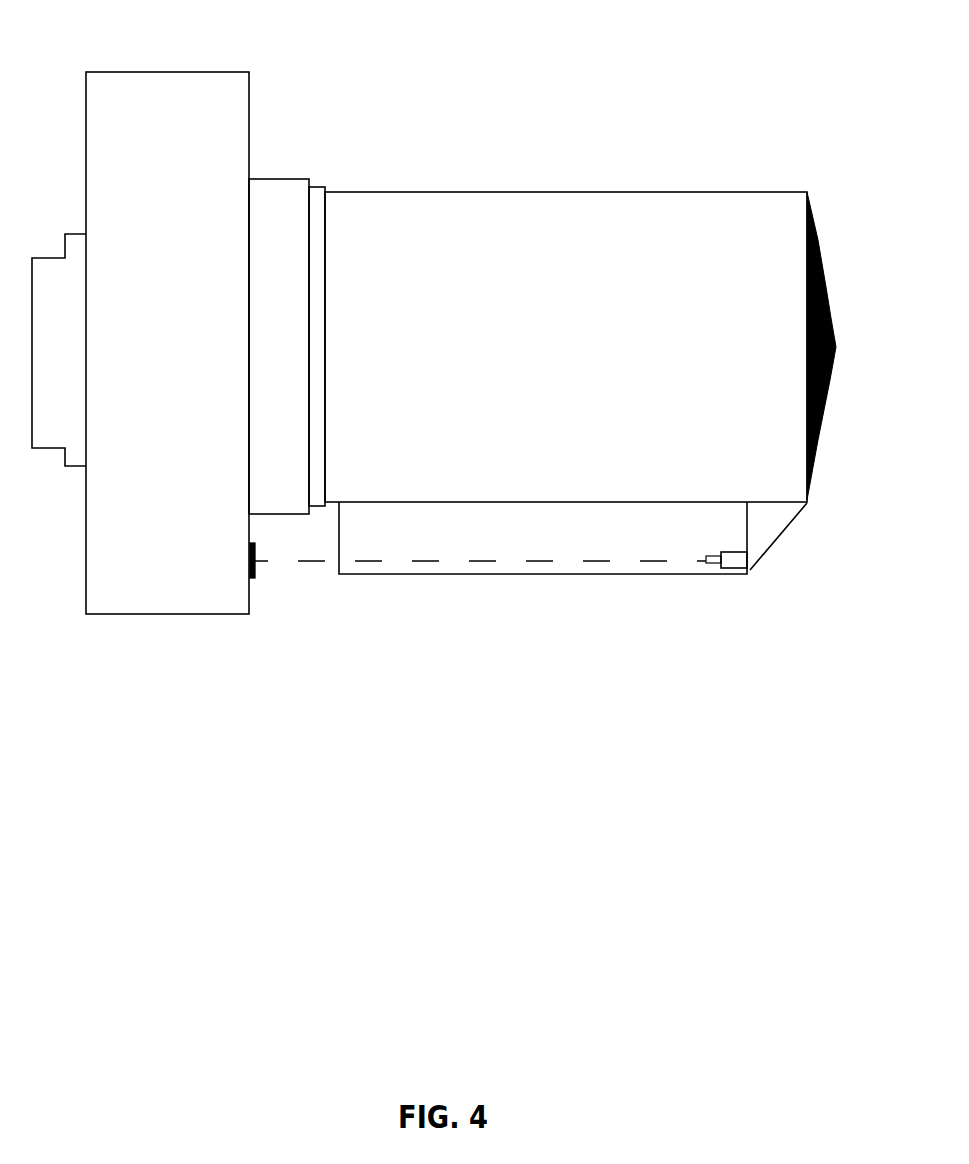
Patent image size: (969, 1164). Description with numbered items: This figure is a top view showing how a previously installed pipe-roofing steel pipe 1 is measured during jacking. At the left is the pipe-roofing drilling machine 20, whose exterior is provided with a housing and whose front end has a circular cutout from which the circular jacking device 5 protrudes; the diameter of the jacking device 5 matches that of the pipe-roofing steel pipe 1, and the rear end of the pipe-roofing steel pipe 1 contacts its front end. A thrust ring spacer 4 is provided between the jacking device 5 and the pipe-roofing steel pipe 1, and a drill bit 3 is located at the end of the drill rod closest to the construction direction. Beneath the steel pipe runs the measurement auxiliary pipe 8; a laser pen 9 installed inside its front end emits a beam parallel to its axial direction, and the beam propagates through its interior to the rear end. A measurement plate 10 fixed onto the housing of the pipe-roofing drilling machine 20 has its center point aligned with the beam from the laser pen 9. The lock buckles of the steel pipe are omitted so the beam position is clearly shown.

The pipe-roofing steel pipe 1 is at (615, 192).
The drill bit 3 is at (825, 295).
The thrust ring spacer 4 is at (325, 187).
The jacking device 5 is at (280, 177).
The measurement auxiliary pipe 8 is at (542, 574).
The laser pen 9 is at (733, 573).
The measurement plate 10 is at (253, 580).
The pipe-roofing drilling machine 20 is at (117, 600).